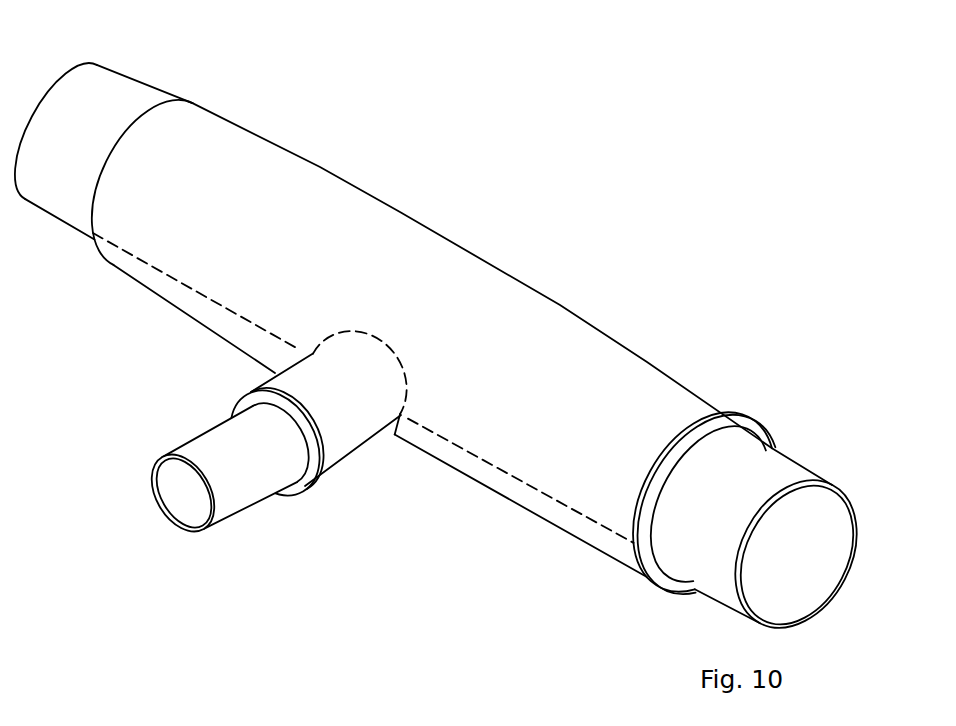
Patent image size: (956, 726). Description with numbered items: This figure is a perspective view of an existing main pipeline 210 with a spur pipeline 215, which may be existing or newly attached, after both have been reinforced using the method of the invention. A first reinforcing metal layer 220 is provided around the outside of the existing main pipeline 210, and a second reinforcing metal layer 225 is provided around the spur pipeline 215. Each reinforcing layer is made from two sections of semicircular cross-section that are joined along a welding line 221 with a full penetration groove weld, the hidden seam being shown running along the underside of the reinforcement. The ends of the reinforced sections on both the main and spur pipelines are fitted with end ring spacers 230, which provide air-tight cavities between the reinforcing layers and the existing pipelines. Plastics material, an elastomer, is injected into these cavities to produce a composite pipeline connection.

The existing main pipeline 210 is at (112, 85).
The first reinforcing metal layer 220 is at (545, 315).
The welding line 221 is at (585, 512).
The second reinforcing metal layer 225 is at (357, 460).
The end ring spacer 230 is at (233, 407).
The spur pipeline 215 is at (237, 490).